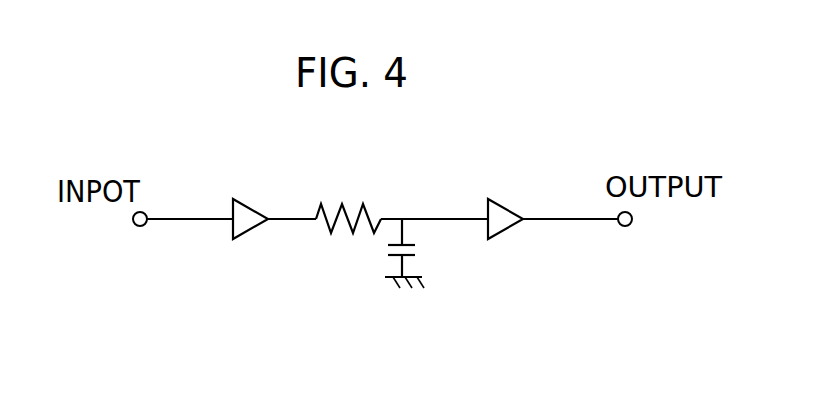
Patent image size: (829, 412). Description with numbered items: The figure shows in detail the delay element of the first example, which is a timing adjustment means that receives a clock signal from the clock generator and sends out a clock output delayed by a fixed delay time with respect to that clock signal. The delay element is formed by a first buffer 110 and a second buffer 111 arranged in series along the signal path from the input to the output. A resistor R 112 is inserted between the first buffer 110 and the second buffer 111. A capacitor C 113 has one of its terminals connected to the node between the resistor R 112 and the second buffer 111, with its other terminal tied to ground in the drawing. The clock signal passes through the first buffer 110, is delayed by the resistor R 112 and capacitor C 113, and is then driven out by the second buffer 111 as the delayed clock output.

The first buffer 110 is at (236, 226).
The second buffer 111 is at (508, 224).
The resistor R 112 is at (346, 201).
The capacitor C 113 is at (396, 257).